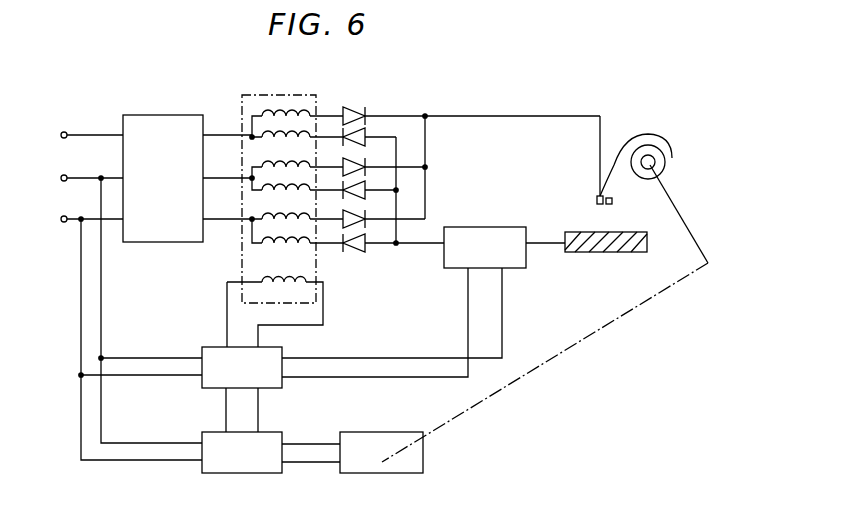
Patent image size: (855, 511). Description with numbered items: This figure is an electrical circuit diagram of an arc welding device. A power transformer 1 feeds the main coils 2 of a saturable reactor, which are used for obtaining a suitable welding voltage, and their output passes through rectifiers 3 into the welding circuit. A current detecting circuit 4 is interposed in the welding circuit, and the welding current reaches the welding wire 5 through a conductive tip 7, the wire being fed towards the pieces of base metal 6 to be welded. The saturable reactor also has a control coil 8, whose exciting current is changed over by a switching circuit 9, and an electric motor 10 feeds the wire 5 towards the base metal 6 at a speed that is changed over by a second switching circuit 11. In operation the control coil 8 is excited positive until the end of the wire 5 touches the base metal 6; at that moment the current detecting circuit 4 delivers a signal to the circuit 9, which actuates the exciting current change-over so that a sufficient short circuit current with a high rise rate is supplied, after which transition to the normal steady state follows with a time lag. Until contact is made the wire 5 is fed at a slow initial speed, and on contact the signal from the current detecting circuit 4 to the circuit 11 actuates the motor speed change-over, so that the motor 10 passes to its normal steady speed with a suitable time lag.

The power transformer 1 is at (163, 128).
The main coils of saturable reactor 2 is at (278, 108).
The rectifiers 3 is at (351, 111).
The current detecting circuit 4 is at (492, 237).
The welding wire 5 is at (651, 145).
The base metal 6 is at (638, 233).
The conductive tip 7 is at (613, 201).
The control coil of saturable reactor 8 is at (300, 284).
The exciting current switching circuit 9 is at (274, 362).
The electric motor 10 is at (369, 442).
The motor speed switching circuit 11 is at (275, 447).